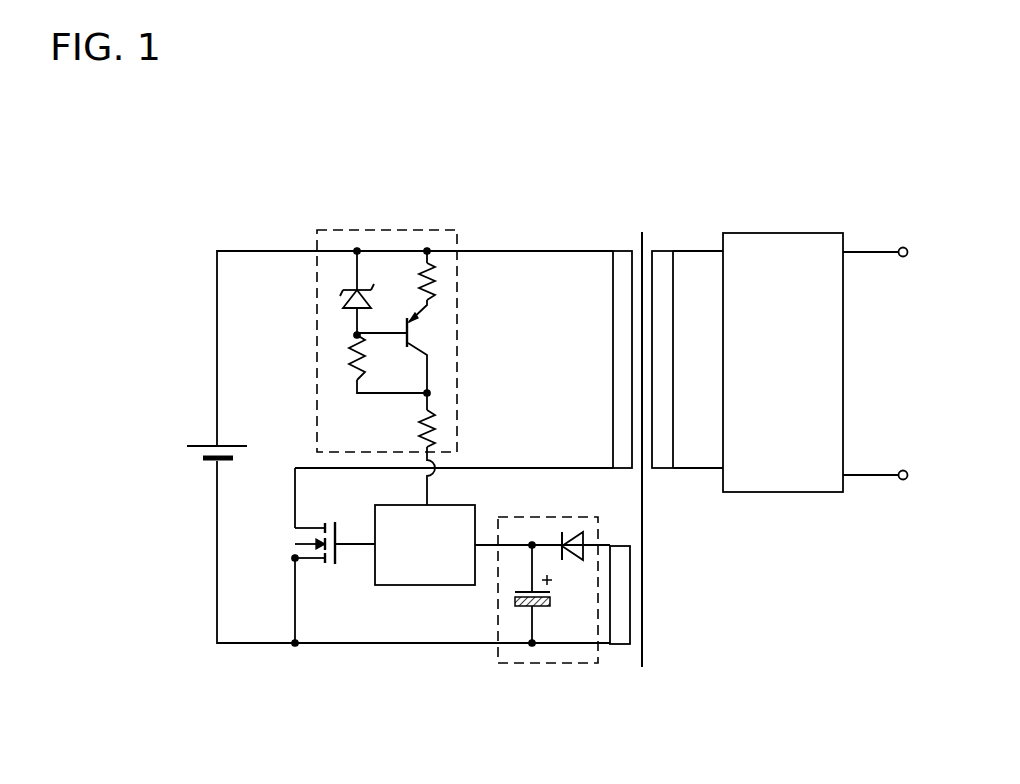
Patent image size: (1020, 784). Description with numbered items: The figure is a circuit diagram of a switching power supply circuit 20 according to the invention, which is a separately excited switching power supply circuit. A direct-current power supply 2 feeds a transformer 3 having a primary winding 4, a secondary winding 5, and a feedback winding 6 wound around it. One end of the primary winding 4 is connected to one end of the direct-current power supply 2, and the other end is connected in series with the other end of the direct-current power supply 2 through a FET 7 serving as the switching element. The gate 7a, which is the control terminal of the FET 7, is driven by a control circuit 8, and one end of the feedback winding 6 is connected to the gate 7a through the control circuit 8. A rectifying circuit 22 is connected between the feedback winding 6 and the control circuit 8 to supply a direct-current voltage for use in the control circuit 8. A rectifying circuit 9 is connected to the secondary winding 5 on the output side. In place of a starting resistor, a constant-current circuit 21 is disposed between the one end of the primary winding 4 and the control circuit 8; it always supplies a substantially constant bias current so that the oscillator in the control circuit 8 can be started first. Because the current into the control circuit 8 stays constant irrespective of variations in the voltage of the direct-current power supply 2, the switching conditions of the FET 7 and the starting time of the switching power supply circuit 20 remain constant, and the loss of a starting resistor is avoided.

The switching power supply circuit 20 is at (257, 210).
The direct-current power supply 2 is at (203, 437).
The constant-current circuit 21 is at (397, 229).
The FET 7 is at (280, 547).
The gate 7a is at (343, 553).
The control circuit 8 is at (413, 590).
The rectifying circuit 22 is at (537, 667).
The feedback winding 6 is at (618, 650).
The primary winding 4 is at (618, 248).
The transformer 3 is at (650, 228).
The secondary winding 5 is at (668, 247).
The rectifying circuit 9 is at (782, 230).